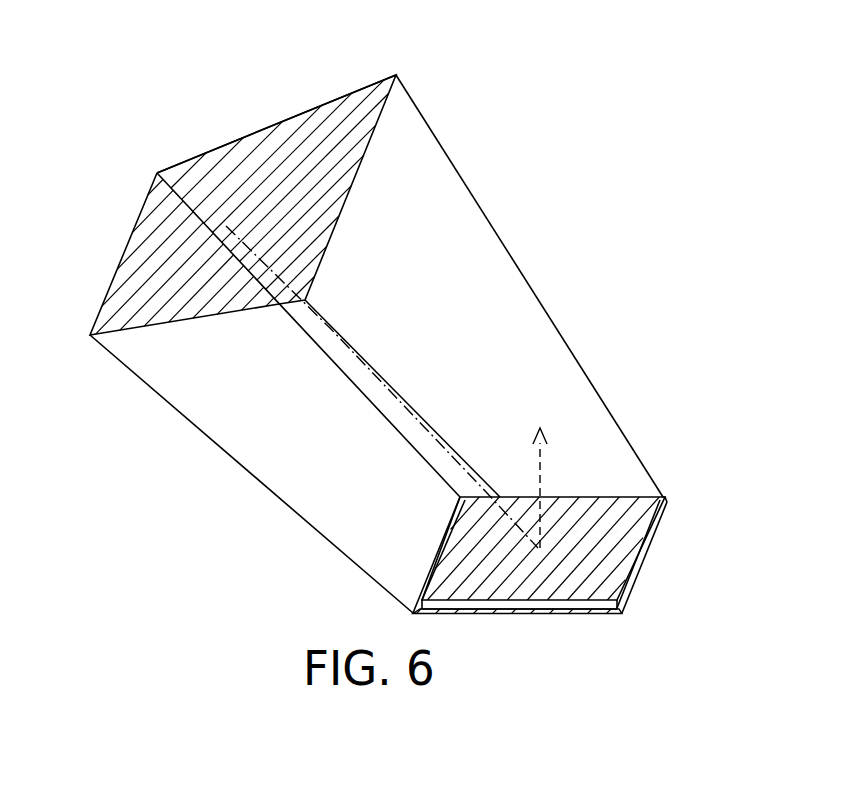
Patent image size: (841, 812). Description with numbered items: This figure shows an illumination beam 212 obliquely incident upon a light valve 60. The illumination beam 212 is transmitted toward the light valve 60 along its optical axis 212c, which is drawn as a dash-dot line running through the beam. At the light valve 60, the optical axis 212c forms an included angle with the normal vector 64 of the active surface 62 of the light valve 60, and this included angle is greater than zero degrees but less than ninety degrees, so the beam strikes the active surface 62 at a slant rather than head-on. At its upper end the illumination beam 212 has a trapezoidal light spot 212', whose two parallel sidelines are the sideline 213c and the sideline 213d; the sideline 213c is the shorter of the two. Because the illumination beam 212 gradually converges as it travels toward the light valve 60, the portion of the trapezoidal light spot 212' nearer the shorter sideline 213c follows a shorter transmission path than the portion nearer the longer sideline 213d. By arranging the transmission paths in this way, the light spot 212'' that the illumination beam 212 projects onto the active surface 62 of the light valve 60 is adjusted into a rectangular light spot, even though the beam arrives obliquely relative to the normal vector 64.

The illumination beam 212 is at (376, 344).
The trapezoidal light spot 212' is at (287, 94).
The light spot 212'' is at (681, 555).
The optical axis 212c is at (397, 395).
The sideline 213c is at (123, 250).
The sideline 213d is at (373, 130).
The active surface 62 is at (623, 512).
The normal vector 64 is at (540, 462).
The light valve 60 is at (593, 613).